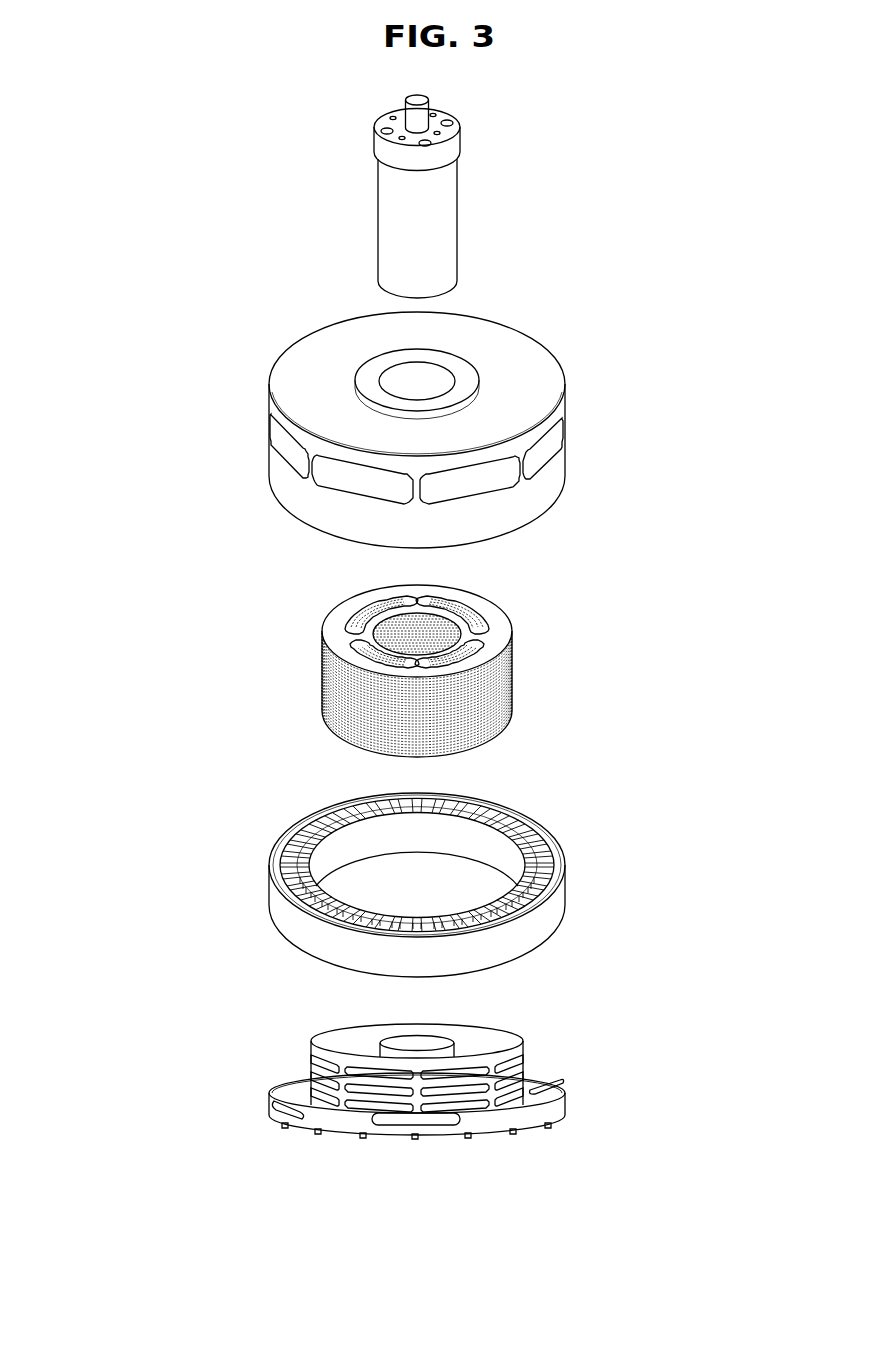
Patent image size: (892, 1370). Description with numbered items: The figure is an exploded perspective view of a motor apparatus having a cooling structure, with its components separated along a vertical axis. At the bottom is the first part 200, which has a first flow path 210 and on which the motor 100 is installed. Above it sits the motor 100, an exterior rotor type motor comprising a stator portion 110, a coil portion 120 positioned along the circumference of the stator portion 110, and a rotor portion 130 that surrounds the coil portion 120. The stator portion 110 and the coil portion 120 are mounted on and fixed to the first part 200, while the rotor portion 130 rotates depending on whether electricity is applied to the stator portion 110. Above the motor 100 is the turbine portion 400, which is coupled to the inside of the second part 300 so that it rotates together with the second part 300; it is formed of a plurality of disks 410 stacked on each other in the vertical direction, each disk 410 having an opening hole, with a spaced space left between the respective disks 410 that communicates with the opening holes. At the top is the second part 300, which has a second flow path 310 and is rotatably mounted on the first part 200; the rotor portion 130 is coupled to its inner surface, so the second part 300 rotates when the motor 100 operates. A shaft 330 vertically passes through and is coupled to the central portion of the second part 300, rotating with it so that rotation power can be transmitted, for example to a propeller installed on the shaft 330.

The motor 100 is at (438, 867).
The stator portion 110 is at (485, 850).
The coil portion 120 is at (275, 870).
The rotor portion 130 is at (287, 918).
The first part 200 is at (493, 1116).
The first flow path 210 is at (395, 1126).
The second part 300 is at (492, 430).
The second flow path 310 is at (500, 478).
The shaft 330 is at (450, 220).
The turbine portion 400 is at (431, 671).
The disk 410 is at (318, 675).